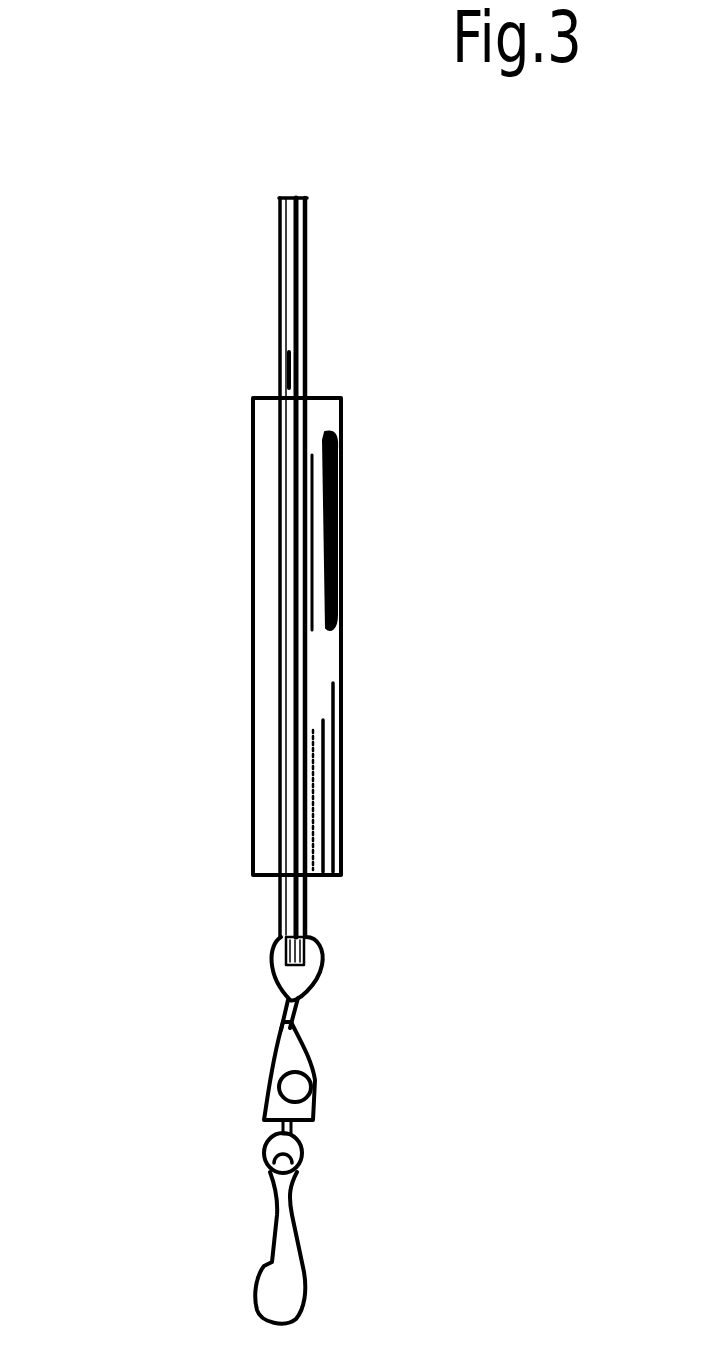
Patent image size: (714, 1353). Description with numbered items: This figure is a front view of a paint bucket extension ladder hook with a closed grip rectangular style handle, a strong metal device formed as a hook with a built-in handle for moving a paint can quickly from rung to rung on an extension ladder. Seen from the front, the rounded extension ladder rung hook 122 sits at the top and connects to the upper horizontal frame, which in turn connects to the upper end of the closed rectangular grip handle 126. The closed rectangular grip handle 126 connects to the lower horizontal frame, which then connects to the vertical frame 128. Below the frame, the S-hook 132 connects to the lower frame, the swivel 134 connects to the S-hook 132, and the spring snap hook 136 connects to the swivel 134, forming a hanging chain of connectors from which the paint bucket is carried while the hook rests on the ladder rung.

The rounded extension ladder rung hook 122 is at (308, 258).
The closed rectangular grip handle 126 is at (340, 520).
The vertical frame 128 is at (283, 905).
The S-hook 132 is at (322, 972).
The swivel 134 is at (315, 1103).
The spring snap hook 136 is at (297, 1222).